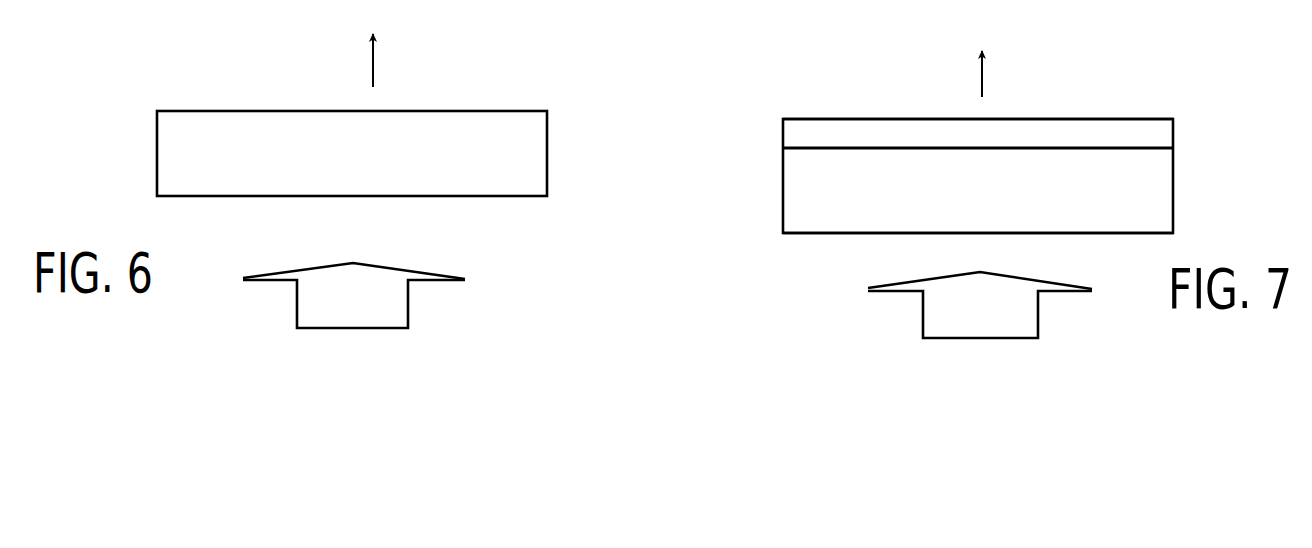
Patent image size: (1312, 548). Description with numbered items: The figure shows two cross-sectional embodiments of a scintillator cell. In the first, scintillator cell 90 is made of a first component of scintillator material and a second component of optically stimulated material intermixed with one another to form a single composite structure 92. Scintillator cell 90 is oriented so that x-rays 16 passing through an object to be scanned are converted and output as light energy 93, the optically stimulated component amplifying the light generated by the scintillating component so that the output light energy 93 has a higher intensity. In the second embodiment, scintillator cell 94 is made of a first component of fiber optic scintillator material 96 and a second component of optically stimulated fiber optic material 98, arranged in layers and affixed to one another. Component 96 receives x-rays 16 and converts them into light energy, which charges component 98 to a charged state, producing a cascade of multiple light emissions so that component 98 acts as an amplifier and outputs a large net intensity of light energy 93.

In FIG. 6, the scintillator cell 90 is at (138, 103).
In FIG. 6, the single composite structure 92 is at (295, 138).
In FIG. 6, the light energy 93 is at (373, 68).
In FIG. 7, the light energy 93 is at (982, 80).
In FIG. 6, the x-rays 16 is at (265, 307).
In FIG. 7, the x-rays 16 is at (895, 320).
In FIG. 7, the scintillator cell 94 is at (773, 98).
In FIG. 7, the fiber optic scintillator material 96 is at (1162, 182).
In FIG. 7, the optically stimulated fiber optic material 98 is at (1163, 135).